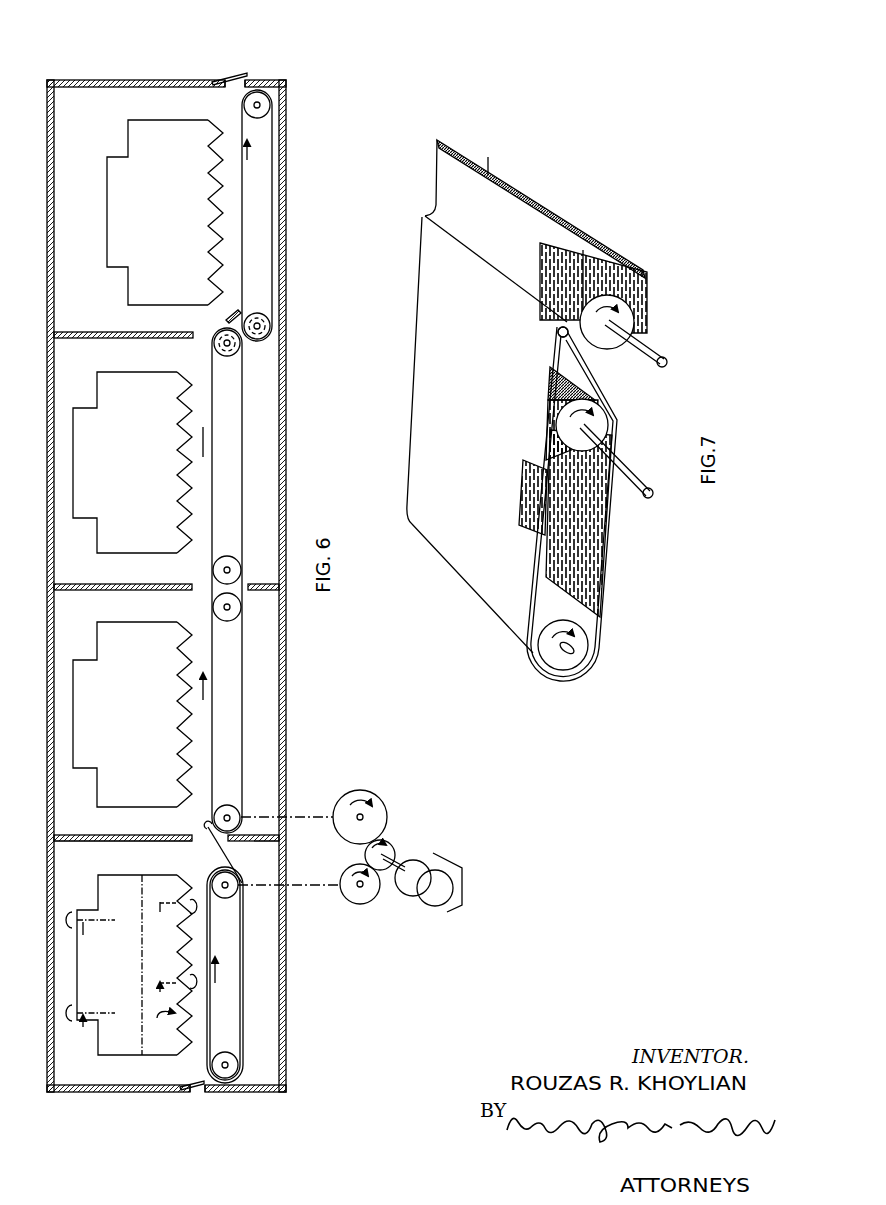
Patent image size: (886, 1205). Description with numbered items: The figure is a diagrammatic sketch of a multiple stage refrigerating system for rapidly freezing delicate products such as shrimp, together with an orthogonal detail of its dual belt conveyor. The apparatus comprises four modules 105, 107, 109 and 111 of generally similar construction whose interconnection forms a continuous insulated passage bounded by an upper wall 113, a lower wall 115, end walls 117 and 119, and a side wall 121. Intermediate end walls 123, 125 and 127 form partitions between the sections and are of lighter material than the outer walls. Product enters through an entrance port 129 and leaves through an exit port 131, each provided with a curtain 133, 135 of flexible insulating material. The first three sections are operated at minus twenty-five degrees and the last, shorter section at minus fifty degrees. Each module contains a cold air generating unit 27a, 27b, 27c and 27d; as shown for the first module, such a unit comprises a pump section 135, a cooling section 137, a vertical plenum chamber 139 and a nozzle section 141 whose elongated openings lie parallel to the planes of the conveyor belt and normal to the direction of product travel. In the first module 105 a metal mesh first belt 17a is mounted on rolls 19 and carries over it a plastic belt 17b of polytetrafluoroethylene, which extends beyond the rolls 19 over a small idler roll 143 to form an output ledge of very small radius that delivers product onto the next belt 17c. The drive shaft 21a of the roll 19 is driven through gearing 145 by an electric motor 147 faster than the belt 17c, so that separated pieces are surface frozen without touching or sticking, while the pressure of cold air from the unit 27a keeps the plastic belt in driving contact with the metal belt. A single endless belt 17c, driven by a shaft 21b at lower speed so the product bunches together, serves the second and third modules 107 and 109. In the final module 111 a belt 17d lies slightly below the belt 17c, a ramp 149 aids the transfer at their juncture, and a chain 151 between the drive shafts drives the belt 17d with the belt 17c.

In FIG. 6, the first belt 17a is at (231, 862).
In FIG. 7, the first belt 17a is at (590, 548).
In FIG. 6, the plastic belt 17b is at (206, 831).
In FIG. 7, the plastic belt 17b is at (474, 465).
In FIG. 6, the belt 17c is at (227, 748).
In FIG. 7, the belt 17c is at (505, 246).
In FIG. 6, the belt 17d is at (254, 229).
In FIG. 6, the rolls 19 is at (218, 897).
In FIG. 7, the rolls 19 is at (558, 428).
In FIG. 6, the drive shaft 21a is at (270, 890).
In FIG. 7, the drive shaft 21a is at (645, 494).
In FIG. 6, the shaft 21b is at (252, 817).
In FIG. 7, the shaft 21b is at (661, 367).
In FIG. 6, the cold air generating unit 27a is at (82, 900).
In FIG. 6, the cold air generating unit 27b is at (82, 647).
In FIG. 6, the cold air generating unit 27c is at (82, 400).
In FIG. 6, the cold air generating unit 27d is at (110, 142).
In FIG. 6, the first module 105 is at (82, 1050).
In FIG. 6, the second module 107 is at (75, 800).
In FIG. 6, the third module 109 is at (75, 552).
In FIG. 6, the fourth module 111 is at (74, 303).
In FIG. 6, the upper wall 113 is at (48, 576).
In FIG. 6, the lower wall 115 is at (286, 717).
In FIG. 6, the end wall 117 is at (109, 1092).
In FIG. 6, the end wall 119 is at (94, 80).
In FIG. 6, the side wall 121 is at (272, 998).
In FIG. 6, the intermediate end wall 123 is at (90, 842).
In FIG. 6, the intermediate end wall 125 is at (88, 590).
In FIG. 6, the intermediate end wall 127 is at (88, 339).
In FIG. 6, the entrance port 129 is at (212, 1088).
In FIG. 6, the exit port 131 is at (226, 89).
In FIG. 6, the curtain 133 is at (198, 1088).
In FIG. 6, the curtain 135 is at (231, 72).
In FIG. 6, the cooling section 137 is at (130, 940).
In FIG. 6, the plenum chamber 139 is at (168, 930).
In FIG. 6, the nozzle section 141 is at (158, 1027).
In FIG. 6, the idler roll 143 is at (207, 829).
In FIG. 7, the idler roll 143 is at (558, 336).
In FIG. 6, the gearing 145 is at (385, 896).
In FIG. 6, the electric motor 147 is at (433, 913).
In FIG. 6, the ramp 149 is at (231, 307).
In FIG. 6, the chain 151 is at (249, 344).